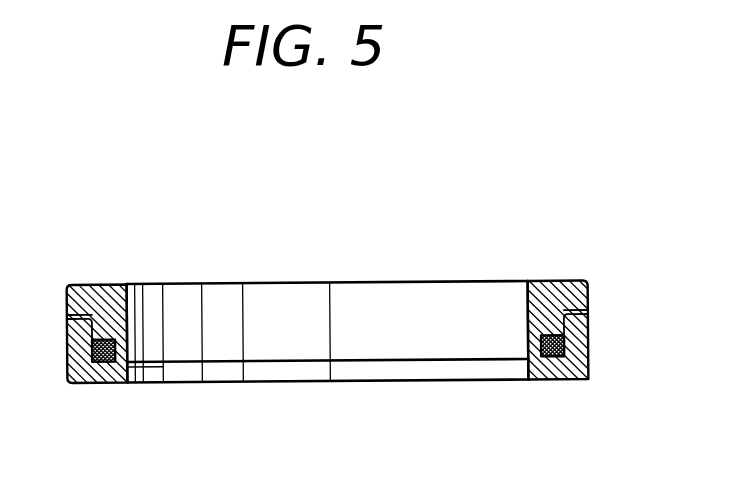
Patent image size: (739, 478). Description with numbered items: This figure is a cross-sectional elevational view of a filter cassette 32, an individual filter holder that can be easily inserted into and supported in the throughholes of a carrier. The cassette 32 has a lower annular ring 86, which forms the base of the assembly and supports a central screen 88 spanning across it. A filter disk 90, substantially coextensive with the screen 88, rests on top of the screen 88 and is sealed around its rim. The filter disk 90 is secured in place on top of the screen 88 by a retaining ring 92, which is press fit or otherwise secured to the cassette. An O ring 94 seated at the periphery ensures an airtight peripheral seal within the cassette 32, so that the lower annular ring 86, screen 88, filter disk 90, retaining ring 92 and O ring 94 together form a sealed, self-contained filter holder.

The filter cassette 32 is at (478, 188).
The lower annular ring 86 is at (101, 386).
The central screen 88 is at (305, 363).
The filter disk 90 is at (348, 359).
The retaining ring 92 is at (105, 306).
The O ring 94 is at (560, 345).